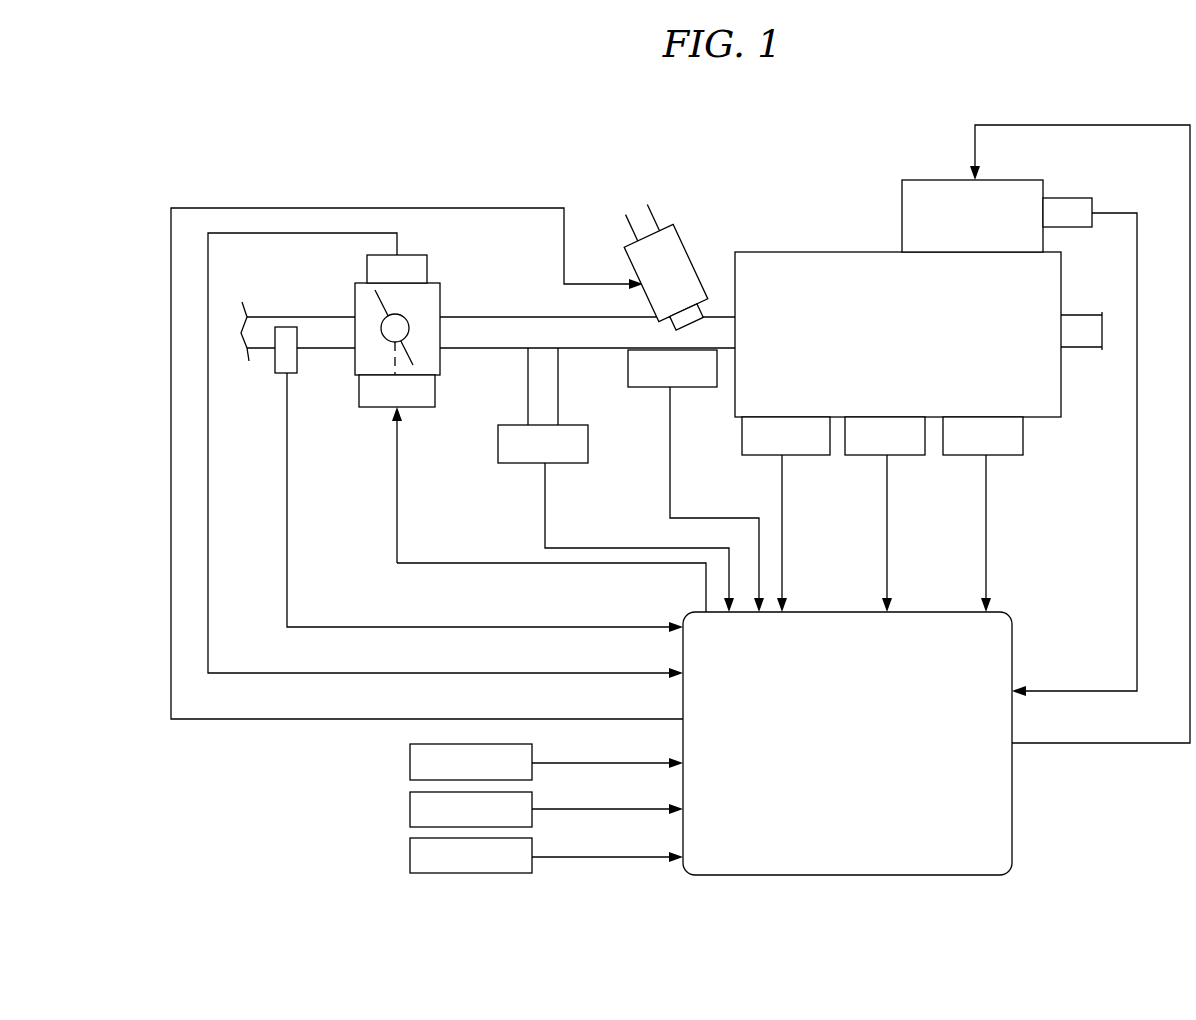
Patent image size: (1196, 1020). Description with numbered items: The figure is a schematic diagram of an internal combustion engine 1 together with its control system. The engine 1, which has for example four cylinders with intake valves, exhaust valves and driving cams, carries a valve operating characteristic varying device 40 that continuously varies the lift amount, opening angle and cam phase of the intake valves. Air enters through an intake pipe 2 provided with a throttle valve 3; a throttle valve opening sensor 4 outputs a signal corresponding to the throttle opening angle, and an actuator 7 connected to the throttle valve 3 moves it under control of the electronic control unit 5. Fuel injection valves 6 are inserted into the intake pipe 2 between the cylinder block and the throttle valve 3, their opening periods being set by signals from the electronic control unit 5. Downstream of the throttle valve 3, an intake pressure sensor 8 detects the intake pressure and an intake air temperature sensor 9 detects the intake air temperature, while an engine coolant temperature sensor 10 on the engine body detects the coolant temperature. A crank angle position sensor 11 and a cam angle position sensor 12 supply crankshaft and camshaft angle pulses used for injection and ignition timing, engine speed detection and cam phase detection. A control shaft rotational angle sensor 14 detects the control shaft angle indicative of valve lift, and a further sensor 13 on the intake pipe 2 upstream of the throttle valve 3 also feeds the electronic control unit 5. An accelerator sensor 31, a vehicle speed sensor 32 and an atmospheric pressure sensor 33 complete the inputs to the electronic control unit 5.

The internal combustion engine 1 is at (812, 252).
The intake pipe 2 is at (532, 317).
The throttle valve 3 is at (383, 312).
The throttle valve opening sensor 4 is at (410, 255).
The electronic control unit 5 is at (937, 612).
The fuel injection valve 6 is at (690, 252).
The actuator 7 is at (428, 407).
The intake pressure sensor 8 is at (570, 463).
The intake air temperature sensor 9 is at (700, 387).
The engine coolant temperature sensor 10 is at (817, 455).
The crank angle position sensor 11 is at (917, 455).
The cam angle position sensor 12 is at (1015, 455).
The intake air flow rate sensor 13 is at (285, 373).
The control shaft rotational angle sensor 14 is at (1063, 198).
The accelerator sensor 31 is at (410, 761).
The vehicle speed sensor 32 is at (410, 807).
The atmospheric pressure sensor 33 is at (410, 855).
The valve operating characteristic varying device 40 is at (920, 180).